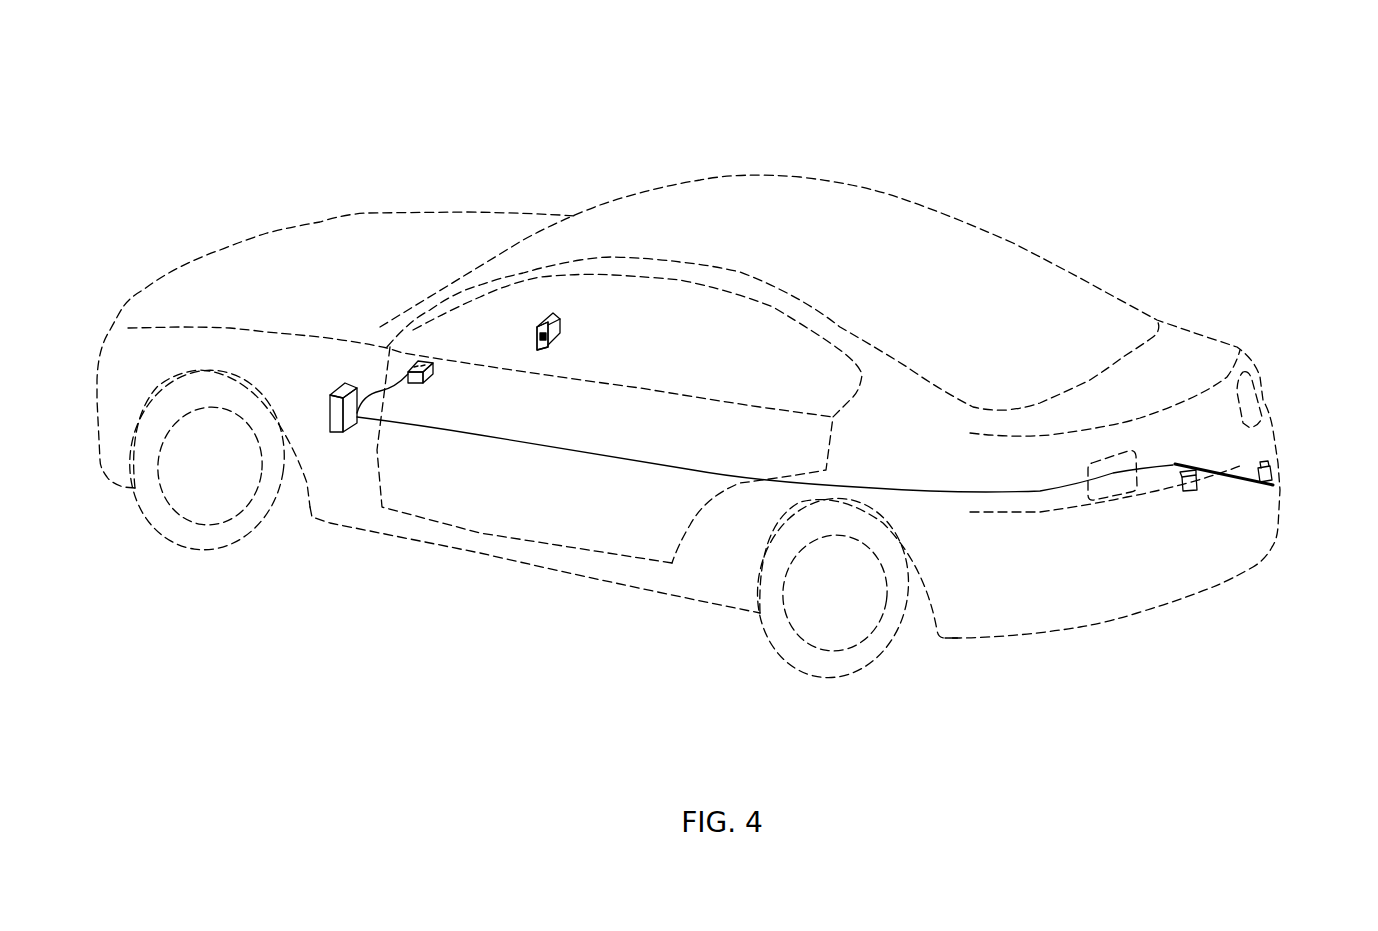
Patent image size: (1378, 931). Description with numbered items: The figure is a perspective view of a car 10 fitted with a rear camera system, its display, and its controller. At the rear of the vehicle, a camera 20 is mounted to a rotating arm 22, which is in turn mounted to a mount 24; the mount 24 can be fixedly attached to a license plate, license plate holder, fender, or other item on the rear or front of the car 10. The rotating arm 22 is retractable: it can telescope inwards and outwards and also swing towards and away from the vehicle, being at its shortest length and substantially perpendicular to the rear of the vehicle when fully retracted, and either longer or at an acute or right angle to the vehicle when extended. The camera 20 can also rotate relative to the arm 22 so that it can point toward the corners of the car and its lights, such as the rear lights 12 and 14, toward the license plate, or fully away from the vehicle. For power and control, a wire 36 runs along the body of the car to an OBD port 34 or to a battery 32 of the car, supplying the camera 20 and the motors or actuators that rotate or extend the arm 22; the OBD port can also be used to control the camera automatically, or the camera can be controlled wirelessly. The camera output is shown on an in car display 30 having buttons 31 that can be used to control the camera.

The car 10 is at (372, 232).
The rear light 12 is at (1247, 387).
The rear light 14 is at (1098, 502).
The camera 20 is at (1272, 474).
The rotating arm 22 is at (1233, 478).
The mount 24 is at (1188, 484).
The in car display 30 is at (556, 330).
The buttons 31 is at (540, 332).
The battery 32 is at (338, 397).
The OBD port 34 is at (423, 378).
The wire 36 is at (697, 472).